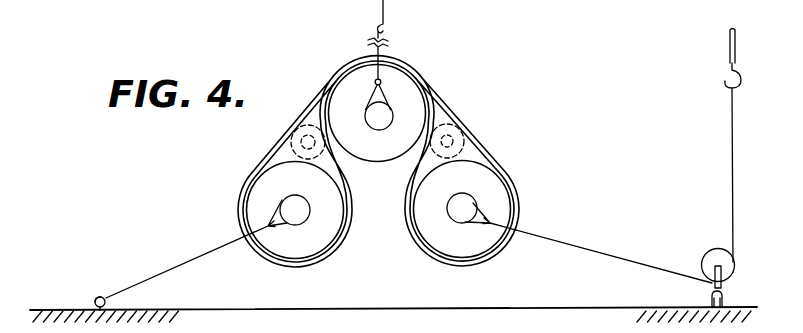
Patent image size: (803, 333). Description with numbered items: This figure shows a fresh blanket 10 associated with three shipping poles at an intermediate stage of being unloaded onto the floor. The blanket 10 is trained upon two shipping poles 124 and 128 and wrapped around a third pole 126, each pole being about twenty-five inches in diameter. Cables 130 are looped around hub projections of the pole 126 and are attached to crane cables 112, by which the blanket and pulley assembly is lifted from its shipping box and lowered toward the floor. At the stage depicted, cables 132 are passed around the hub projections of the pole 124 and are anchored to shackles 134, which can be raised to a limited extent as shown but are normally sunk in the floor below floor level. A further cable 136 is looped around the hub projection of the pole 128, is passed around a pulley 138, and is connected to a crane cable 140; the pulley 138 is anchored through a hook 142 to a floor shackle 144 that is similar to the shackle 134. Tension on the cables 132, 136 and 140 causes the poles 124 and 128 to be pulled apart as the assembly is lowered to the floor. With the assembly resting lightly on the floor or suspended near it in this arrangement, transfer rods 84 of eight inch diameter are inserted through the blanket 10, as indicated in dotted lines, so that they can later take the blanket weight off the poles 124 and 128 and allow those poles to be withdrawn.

The fresh blanket 10 is at (450, 107).
The transfer rods 84 is at (289, 133).
The crane cables 112 is at (385, 12).
The shipping pole 124 is at (255, 201).
The pole 126 is at (352, 85).
The shipping pole 128 is at (500, 191).
The cables 130 is at (386, 46).
The cables 132 is at (170, 268).
The shackles 134 is at (93, 302).
The further cable 136 is at (613, 253).
The pulley 138 is at (710, 260).
The hook 142 is at (727, 291).
The floor shackle 144 is at (708, 296).
The crane cable 140 is at (730, 50).